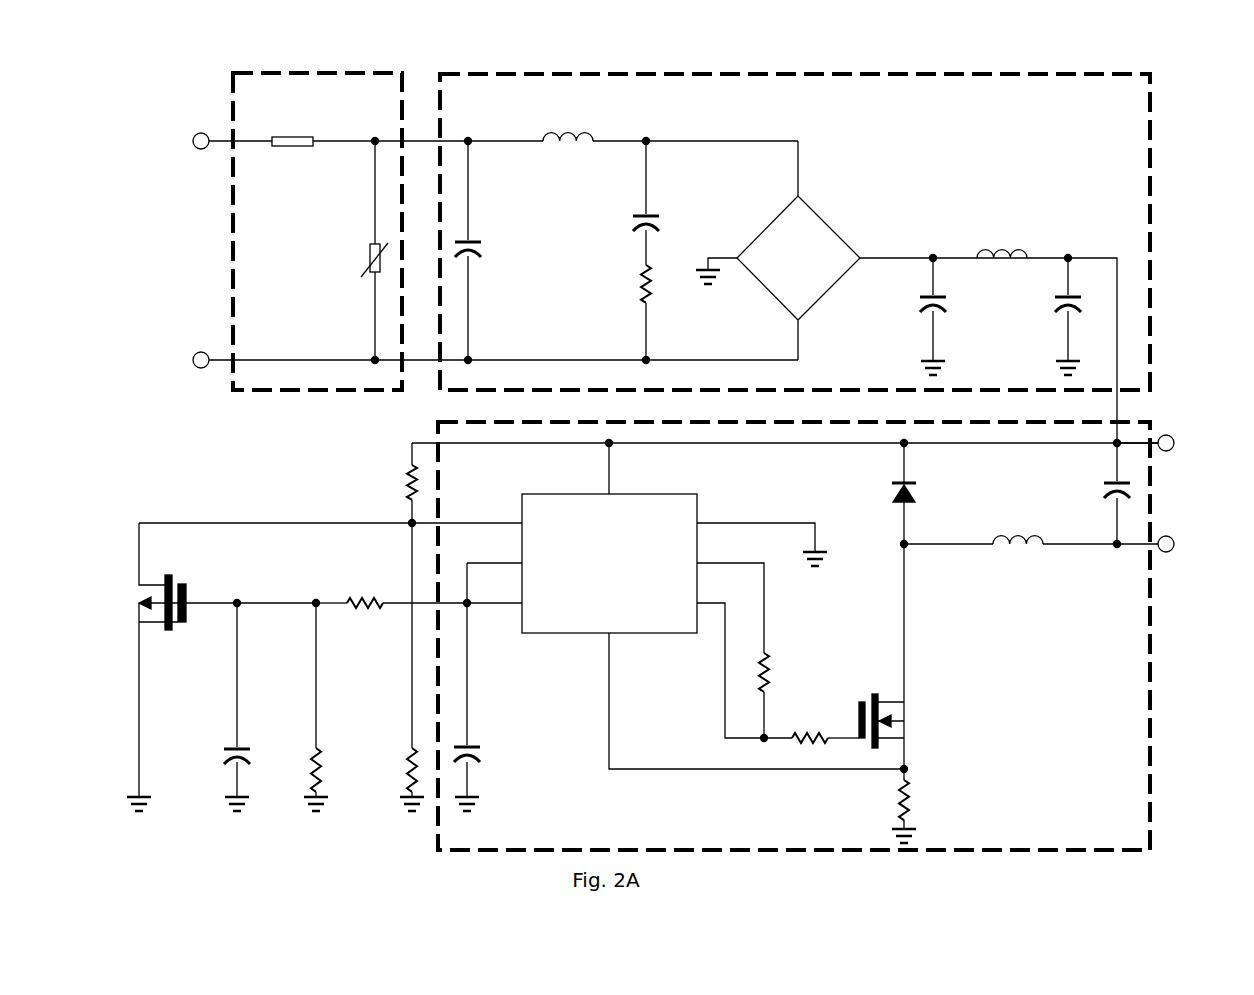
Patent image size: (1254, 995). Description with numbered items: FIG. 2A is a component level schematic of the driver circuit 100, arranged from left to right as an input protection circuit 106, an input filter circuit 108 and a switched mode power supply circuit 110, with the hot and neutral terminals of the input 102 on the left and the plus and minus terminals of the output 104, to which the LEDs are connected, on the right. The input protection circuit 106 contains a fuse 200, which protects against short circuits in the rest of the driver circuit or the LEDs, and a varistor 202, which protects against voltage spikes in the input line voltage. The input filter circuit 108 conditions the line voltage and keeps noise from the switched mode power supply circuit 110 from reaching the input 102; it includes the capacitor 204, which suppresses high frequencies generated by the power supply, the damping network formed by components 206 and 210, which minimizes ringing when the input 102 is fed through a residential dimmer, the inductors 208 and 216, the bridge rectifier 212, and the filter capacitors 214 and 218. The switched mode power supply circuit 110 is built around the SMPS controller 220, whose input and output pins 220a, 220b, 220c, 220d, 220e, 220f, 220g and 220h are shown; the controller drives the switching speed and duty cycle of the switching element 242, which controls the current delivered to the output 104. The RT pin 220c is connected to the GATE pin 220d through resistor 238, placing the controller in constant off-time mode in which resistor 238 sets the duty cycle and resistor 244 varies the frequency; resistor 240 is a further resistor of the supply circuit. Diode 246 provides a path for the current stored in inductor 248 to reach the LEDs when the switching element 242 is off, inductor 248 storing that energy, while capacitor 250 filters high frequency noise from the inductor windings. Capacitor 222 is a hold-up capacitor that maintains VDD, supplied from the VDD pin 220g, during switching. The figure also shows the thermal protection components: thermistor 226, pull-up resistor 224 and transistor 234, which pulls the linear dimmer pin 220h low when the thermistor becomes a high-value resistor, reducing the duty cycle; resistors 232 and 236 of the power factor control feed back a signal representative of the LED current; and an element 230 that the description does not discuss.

The driver circuit 100 is at (172, 51).
The input 102 is at (370, 251).
The output 104 is at (1177, 494).
The input protection circuit 106 is at (317, 215).
The input filter circuit 108 is at (795, 215).
The switched mode power supply (SMPS) circuit 110 is at (794, 650).
The fuse 200 is at (407, 124).
The varistor 202 is at (354, 252).
The capacitor 204 is at (496, 252).
The resistor 206 is at (694, 314).
The inductor 208 is at (625, 203).
The capacitor 210 is at (670, 123).
The bridge rectifier 212 is at (906, 292).
The filter capacitor 214 is at (913, 315).
The inductor 216 is at (1002, 235).
The filter capacitor 218 is at (1048, 315).
The SMPS controller 220 is at (598, 572).
The pin 220a is at (642, 467).
The pin 220b is at (762, 527).
The RT pin 220c is at (730, 594).
The GATE pin 220d is at (726, 670).
The pin 220e is at (724, 701).
The pin 220f is at (493, 654).
The VDD pin 220g is at (452, 569).
The linear dimmer (LD) pin 220h is at (468, 499).
The hold-up capacitor 222 is at (494, 778).
The resistor 224 is at (351, 587).
The thermistor 226 is at (297, 706).
The capacitor 230 is at (210, 706).
The resistor 232 is at (391, 667).
The transistor 234 is at (271, 666).
The resistor 236 is at (758, 483).
The resistor 238 is at (790, 693).
The resistor 240 is at (824, 722).
The switching element 242 is at (909, 721).
The resistor 244 is at (927, 805).
The diode 246 is at (929, 605).
The inductor 248 is at (1010, 554).
The capacitor 250 is at (1092, 494).